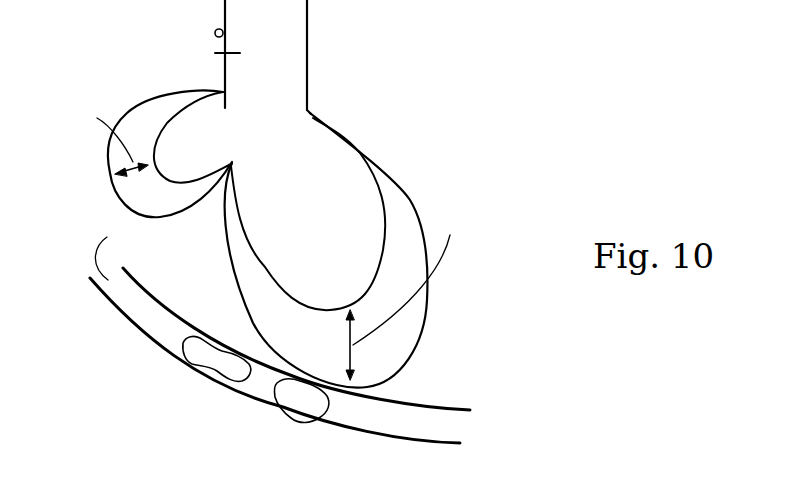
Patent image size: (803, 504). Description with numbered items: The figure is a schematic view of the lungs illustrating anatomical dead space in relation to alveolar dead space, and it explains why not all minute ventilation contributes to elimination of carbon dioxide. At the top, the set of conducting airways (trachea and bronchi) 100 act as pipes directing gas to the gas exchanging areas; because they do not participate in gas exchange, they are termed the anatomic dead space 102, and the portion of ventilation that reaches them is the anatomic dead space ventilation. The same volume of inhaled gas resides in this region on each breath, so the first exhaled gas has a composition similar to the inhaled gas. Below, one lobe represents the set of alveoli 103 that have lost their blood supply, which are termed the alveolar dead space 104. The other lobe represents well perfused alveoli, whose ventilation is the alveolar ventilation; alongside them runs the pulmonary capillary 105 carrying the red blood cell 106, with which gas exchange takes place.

The conducting airways 100 is at (395, 119).
The anatomic dead space 102 is at (240, 54).
The alveoli 103 is at (442, 121).
The alveolar dead space 104 is at (167, 165).
The pulmonary capillary 105 is at (132, 327).
The red blood cell 106 is at (320, 407).